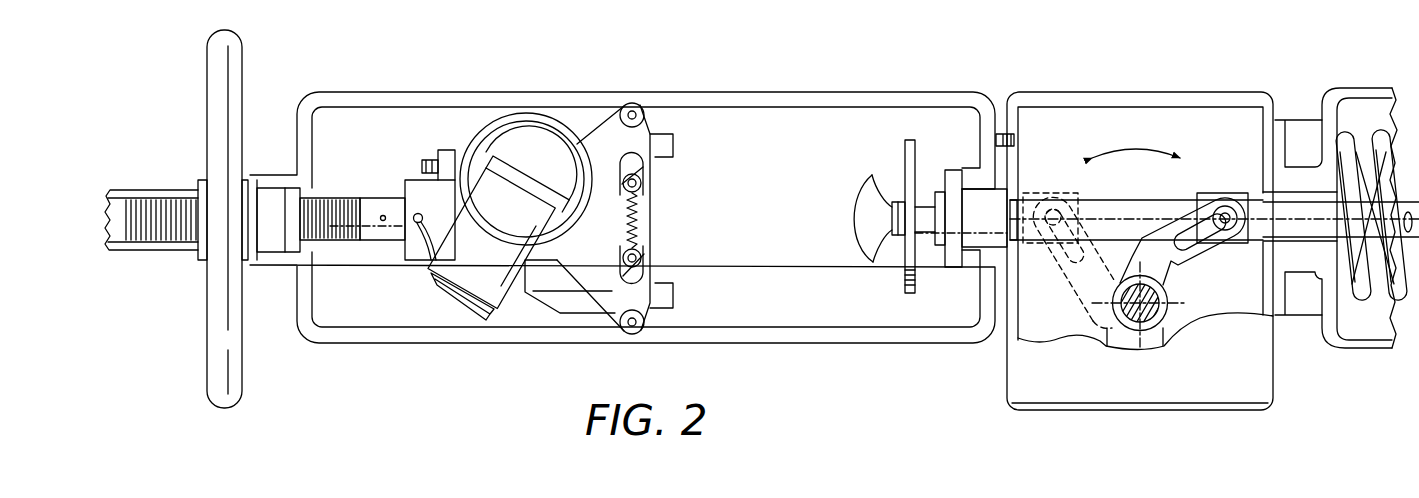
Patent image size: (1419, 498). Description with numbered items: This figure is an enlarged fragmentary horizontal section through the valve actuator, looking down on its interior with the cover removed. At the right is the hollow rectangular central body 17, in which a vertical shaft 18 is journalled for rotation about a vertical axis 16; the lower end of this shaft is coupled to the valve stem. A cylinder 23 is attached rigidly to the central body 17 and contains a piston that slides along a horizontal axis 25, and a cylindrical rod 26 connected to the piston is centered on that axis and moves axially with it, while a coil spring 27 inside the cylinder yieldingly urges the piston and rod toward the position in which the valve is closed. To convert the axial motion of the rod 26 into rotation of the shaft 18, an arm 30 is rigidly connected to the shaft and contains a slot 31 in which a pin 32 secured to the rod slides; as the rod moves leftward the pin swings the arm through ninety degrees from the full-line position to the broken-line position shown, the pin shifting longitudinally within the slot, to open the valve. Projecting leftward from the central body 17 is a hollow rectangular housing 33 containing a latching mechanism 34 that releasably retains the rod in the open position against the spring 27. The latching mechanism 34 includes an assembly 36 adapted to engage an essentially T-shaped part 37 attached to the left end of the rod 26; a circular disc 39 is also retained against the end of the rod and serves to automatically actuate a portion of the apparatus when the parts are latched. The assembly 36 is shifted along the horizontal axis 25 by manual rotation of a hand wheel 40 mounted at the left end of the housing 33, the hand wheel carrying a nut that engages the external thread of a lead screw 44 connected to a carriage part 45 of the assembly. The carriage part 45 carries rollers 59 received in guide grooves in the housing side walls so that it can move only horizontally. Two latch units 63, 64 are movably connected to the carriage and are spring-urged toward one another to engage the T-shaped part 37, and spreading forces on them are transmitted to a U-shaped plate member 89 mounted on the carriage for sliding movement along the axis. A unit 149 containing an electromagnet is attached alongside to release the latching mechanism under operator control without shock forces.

The axis 16 is at (1113, 313).
The central body 17 is at (1123, 92).
The vertical shaft 18 is at (1158, 313).
The cylinder 23 is at (1350, 92).
The horizontal axis 25 is at (1303, 220).
The cylindrical rod 26 is at (1315, 230).
The coil spring 27 is at (1348, 341).
The arm 30 is at (1174, 265).
The slot 31 is at (1187, 232).
The pin 32 is at (1230, 231).
The housing 33 is at (835, 92).
The latching mechanism 34 is at (679, 119).
The assembly 36 is at (512, 131).
The T-shaped part 37 is at (855, 207).
The circular disc 39 is at (915, 164).
The hand wheel 40 is at (243, 62).
The lead screw 44 is at (335, 198).
The carriage part 45 is at (415, 180).
The rollers 59 is at (622, 96).
The latch unit 63 is at (647, 260).
The latch unit 64 is at (647, 178).
The member 89 is at (552, 305).
The unit 149 is at (426, 269).